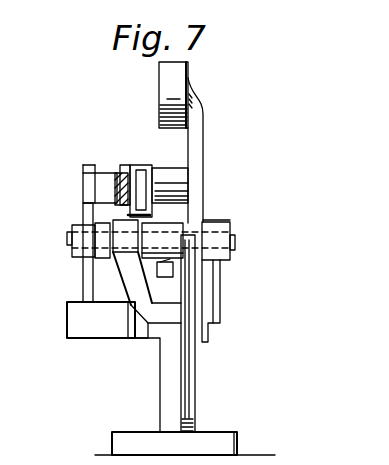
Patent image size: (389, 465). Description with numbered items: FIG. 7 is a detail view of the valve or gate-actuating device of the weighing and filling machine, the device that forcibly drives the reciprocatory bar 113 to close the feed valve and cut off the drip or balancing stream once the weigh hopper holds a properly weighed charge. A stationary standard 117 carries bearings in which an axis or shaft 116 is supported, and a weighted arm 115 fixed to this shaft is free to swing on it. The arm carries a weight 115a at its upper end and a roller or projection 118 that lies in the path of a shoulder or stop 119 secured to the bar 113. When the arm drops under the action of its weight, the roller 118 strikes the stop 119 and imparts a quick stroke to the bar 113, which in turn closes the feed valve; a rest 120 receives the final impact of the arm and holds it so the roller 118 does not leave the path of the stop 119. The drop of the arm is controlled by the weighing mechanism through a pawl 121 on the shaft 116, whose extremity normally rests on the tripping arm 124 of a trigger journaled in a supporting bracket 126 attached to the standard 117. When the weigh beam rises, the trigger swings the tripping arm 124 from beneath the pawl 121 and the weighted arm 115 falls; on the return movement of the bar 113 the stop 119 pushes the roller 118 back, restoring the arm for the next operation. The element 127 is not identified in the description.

The weight 115a is at (167, 93).
The weighted arm 115 is at (204, 135).
The reciprocatory bar 113 is at (112, 177).
The roller or projection 118 is at (147, 164).
The shoulder or stop 119 is at (147, 215).
The upper block 127 is at (84, 193).
The pawl 121 is at (86, 210).
The axis or shaft 116 is at (233, 243).
The tripping arm 124 is at (83, 281).
The supporting bracket 126 is at (124, 279).
The stationary standard 117 is at (159, 382).
The rest 120 is at (191, 368).